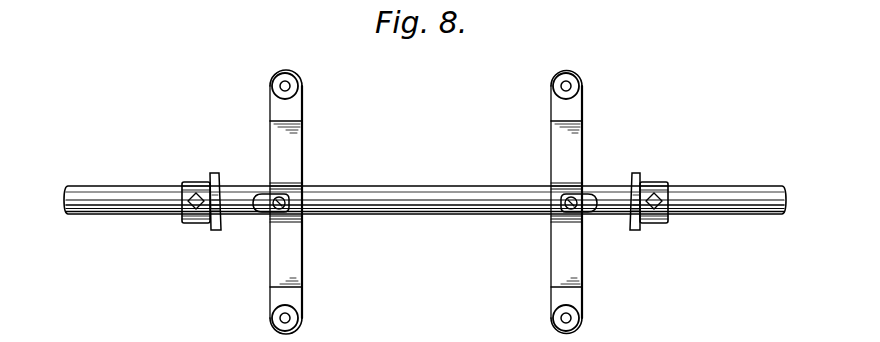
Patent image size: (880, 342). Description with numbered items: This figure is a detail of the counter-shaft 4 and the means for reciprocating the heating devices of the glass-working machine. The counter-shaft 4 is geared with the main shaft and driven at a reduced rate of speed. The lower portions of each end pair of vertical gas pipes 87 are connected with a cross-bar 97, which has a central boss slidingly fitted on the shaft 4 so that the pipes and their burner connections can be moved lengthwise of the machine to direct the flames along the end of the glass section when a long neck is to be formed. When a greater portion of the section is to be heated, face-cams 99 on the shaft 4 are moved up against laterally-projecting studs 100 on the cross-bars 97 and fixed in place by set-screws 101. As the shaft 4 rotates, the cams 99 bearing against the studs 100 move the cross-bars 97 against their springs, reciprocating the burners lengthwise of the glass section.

The counter-shaft 4 is at (420, 213).
The vertical pipes 87 is at (280, 86).
The cross-bar 97 is at (288, 146).
The face-cams 99 is at (218, 172).
The laterally-projecting studs 100 is at (261, 208).
The set-screws 101 is at (196, 213).